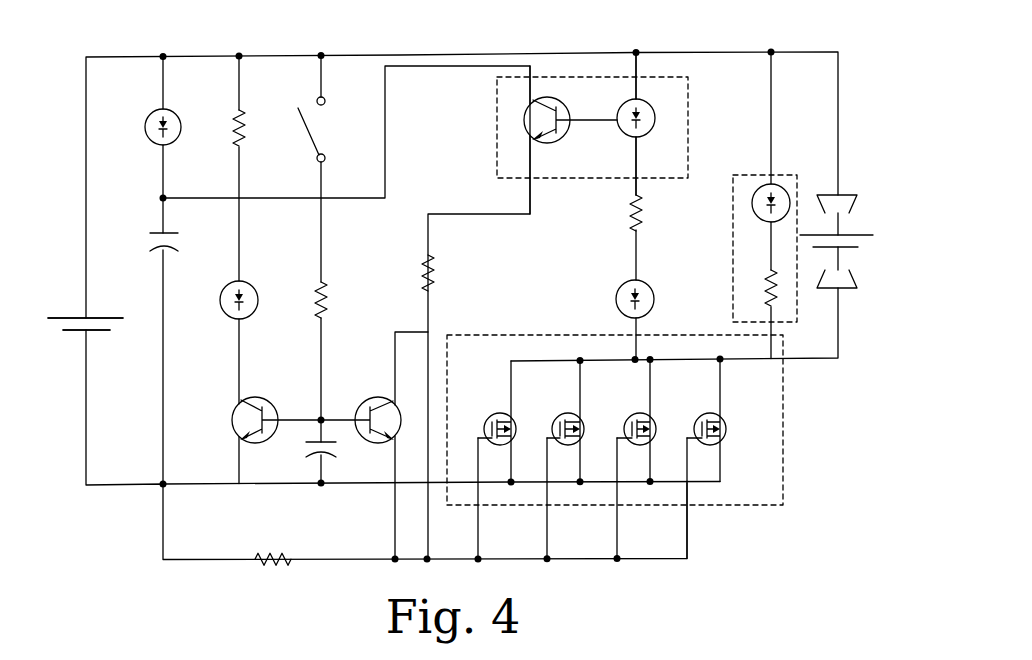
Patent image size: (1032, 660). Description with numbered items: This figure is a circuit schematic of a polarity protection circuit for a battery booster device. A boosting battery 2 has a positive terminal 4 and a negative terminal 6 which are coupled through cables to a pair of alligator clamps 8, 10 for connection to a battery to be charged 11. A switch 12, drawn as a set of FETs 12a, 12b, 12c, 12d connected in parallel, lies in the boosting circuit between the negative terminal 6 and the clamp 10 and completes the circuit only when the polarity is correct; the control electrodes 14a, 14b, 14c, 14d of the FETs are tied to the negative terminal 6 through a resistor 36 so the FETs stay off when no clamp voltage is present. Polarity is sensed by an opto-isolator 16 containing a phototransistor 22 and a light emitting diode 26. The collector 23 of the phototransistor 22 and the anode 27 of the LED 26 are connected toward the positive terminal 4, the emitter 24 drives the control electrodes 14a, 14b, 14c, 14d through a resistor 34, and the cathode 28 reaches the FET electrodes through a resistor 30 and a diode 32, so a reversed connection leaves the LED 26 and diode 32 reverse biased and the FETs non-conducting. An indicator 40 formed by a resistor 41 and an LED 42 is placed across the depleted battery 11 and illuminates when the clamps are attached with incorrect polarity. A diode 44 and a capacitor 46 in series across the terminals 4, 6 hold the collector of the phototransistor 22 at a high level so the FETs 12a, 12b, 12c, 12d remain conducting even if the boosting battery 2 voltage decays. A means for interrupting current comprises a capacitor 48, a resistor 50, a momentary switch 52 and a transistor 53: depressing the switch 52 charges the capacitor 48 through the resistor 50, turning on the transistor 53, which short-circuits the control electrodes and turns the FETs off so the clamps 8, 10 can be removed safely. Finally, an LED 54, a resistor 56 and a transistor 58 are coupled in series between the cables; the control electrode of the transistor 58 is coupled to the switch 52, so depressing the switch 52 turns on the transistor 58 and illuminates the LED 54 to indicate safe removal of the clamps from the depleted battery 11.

The boosting battery 2 is at (78, 317).
The positive terminal 4 is at (88, 294).
The negative terminal 6 is at (116, 339).
The alligator clamp 8 is at (852, 195).
The alligator clamp 10 is at (847, 292).
The battery to be charged 11 is at (859, 218).
The switch 12 is at (783, 440).
The FET 12a is at (493, 448).
The FET 12b is at (561, 448).
The FET 12c is at (631, 448).
The FET 12d is at (701, 448).
The control electrode 14a is at (480, 437).
The control electrode 14b is at (548, 437).
The control electrode 14c is at (618, 437).
The control electrode 14d is at (688, 437).
The opto-isolator 16 is at (590, 77).
The phototransistor 22 is at (558, 140).
The collector 23 is at (530, 88).
The emitter 24 is at (530, 158).
The light emitting diode 26 is at (657, 118).
The anode 27 is at (636, 90).
The cathode 28 is at (640, 150).
The resistor 30 is at (650, 213).
The diode 32 is at (618, 293).
The resistor 34 is at (411, 273).
The resistor 36 is at (273, 579).
The indicator 40 is at (788, 322).
The resistor 41 is at (758, 288).
The LED 42 is at (772, 185).
The diode 44 is at (143, 127).
The capacitor 46 is at (148, 242).
The capacitor 48 is at (307, 448).
The resistor 50 is at (306, 300).
The switch 52 is at (324, 129).
The transistor 53 is at (361, 404).
The LED 54 is at (226, 300).
The resistor 56 is at (250, 128).
The transistor 58 is at (276, 404).